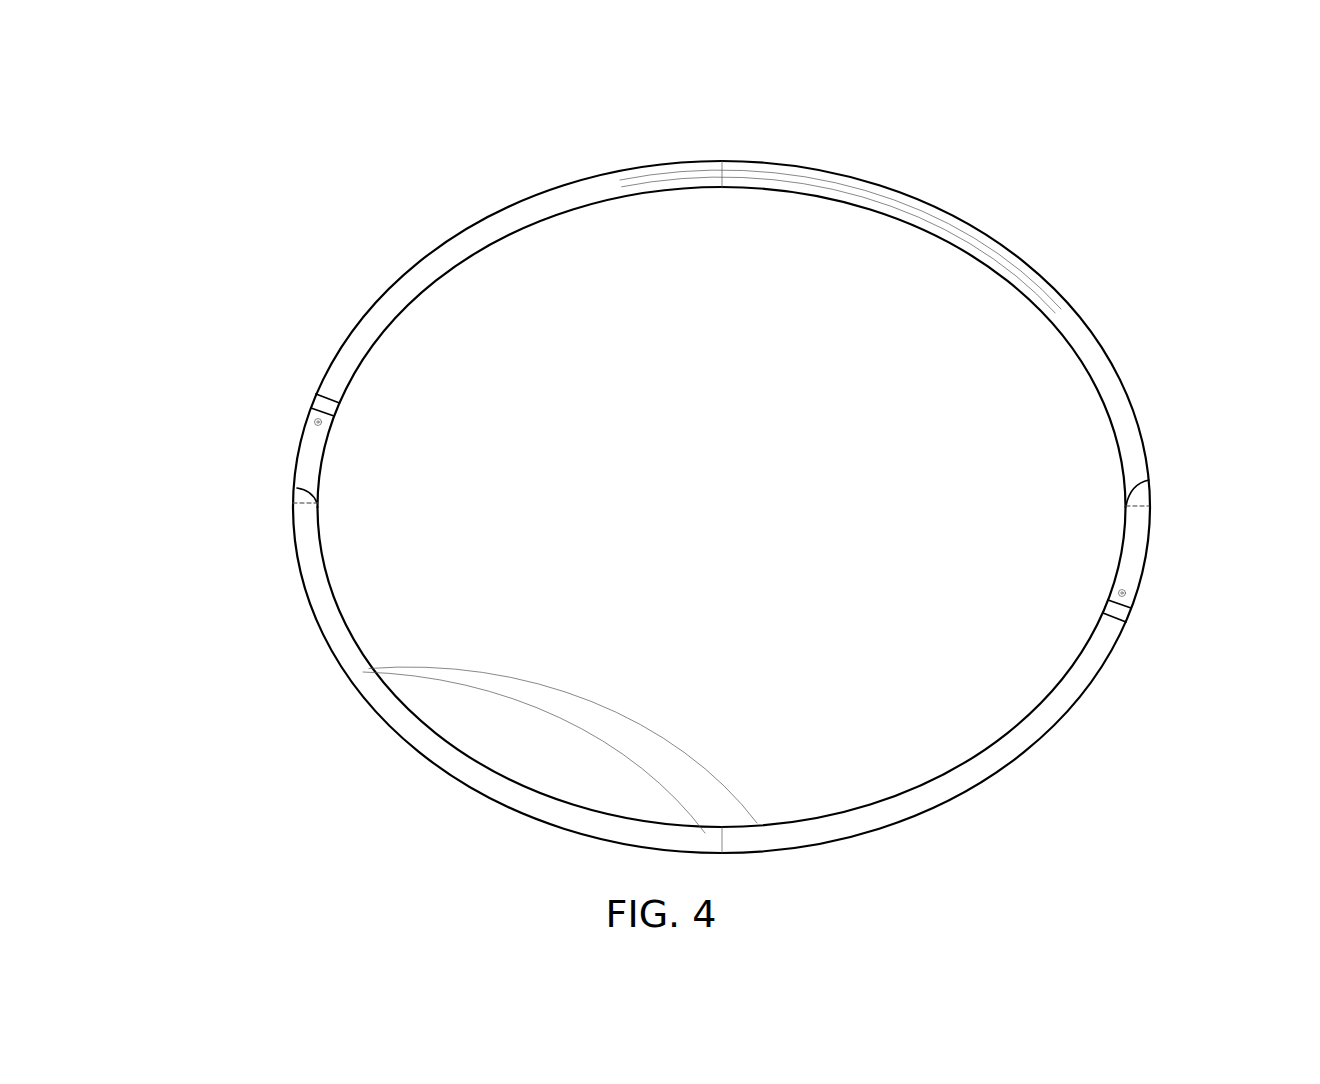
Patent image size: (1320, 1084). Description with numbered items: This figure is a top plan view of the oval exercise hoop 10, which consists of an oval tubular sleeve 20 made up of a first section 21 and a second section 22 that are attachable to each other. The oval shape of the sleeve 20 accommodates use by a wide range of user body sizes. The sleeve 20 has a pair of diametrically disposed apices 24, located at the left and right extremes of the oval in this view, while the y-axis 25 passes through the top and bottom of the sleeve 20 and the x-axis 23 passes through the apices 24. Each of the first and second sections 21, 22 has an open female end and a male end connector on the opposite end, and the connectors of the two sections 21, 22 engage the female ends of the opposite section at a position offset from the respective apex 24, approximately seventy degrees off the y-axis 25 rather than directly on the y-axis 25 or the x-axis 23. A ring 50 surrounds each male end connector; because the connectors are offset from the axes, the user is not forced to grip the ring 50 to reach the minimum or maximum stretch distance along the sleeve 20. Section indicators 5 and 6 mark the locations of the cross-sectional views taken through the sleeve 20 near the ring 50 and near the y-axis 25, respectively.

The section line 5- 5 is at (343, 366).
The section line 6- 6 is at (712, 150).
The oval exercise hoop 10 is at (721, 507).
The oval tubular sleeve 20 is at (737, 497).
The first section 21 is at (1067, 327).
The second section 22 is at (1070, 697).
The x-axis 23 is at (297, 488).
The apex 24 is at (290, 522).
The y-axis 25 is at (722, 180).
The ring 50 is at (333, 399).